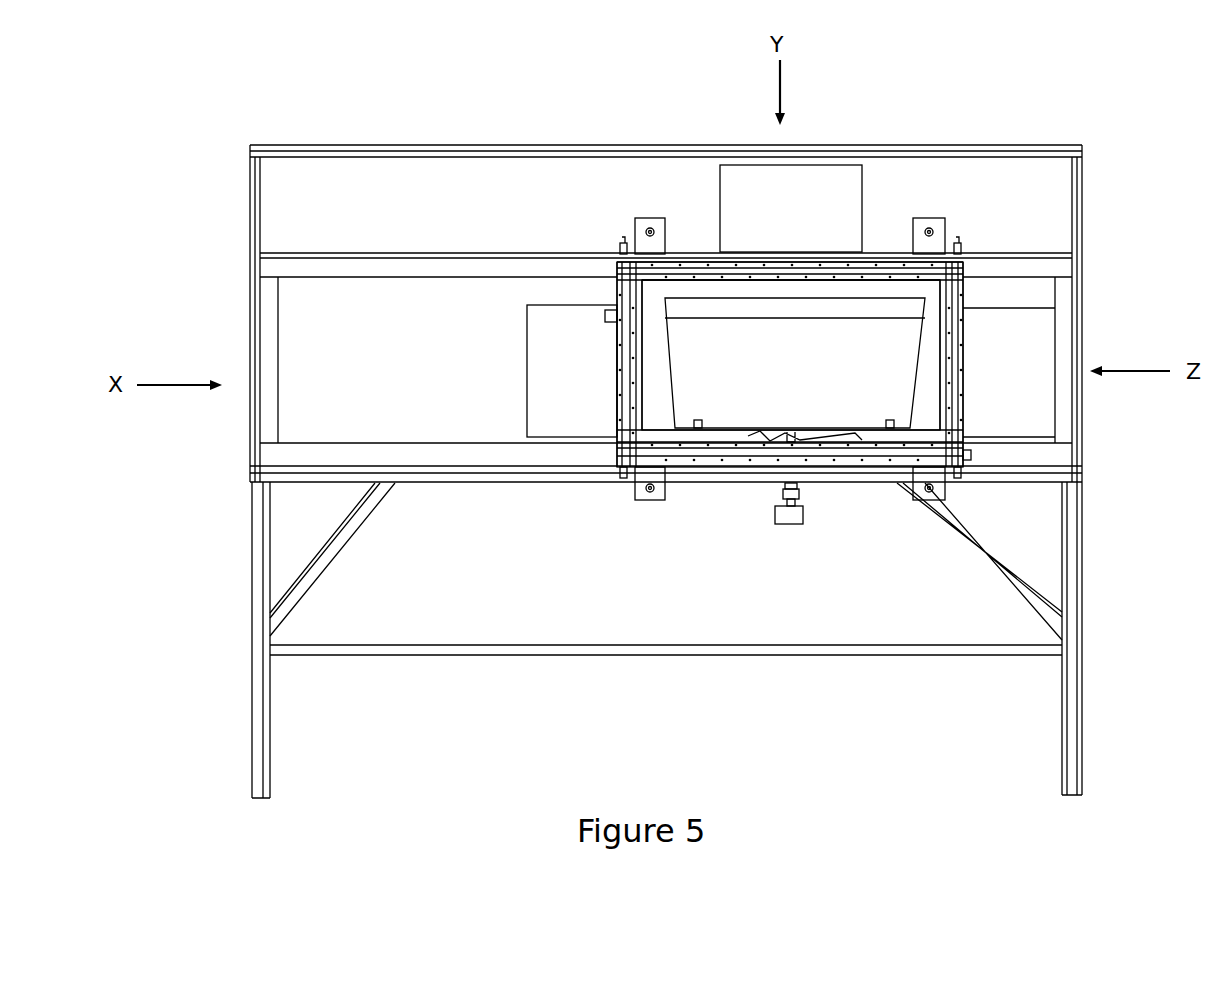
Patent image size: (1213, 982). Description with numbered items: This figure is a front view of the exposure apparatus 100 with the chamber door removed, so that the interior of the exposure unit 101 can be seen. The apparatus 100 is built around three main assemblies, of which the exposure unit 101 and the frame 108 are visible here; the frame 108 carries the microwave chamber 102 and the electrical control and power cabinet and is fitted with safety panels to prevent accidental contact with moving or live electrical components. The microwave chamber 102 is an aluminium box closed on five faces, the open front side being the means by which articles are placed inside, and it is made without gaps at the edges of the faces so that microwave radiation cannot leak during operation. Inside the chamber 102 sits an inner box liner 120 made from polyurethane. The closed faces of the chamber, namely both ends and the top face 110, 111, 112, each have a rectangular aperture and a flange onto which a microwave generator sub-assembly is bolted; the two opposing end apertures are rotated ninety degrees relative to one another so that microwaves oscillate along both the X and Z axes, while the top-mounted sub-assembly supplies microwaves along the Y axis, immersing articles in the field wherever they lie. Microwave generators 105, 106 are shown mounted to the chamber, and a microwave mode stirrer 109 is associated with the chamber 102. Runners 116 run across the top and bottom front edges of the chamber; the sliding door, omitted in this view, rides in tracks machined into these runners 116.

The apparatus 100 is at (378, 121).
The exposure unit 101 is at (884, 244).
The microwave chamber 102 is at (654, 396).
The microwave generator 105 is at (537, 319).
The microwave generator 106 is at (846, 170).
The frame 108 is at (260, 598).
The microwave mode stirrer 109 is at (849, 450).
The chamber end face 110 is at (610, 288).
The top face 111 is at (683, 240).
The chamber end face 112 is at (975, 284).
The runners 116 is at (333, 267).
The inner box liner 120 is at (745, 368).